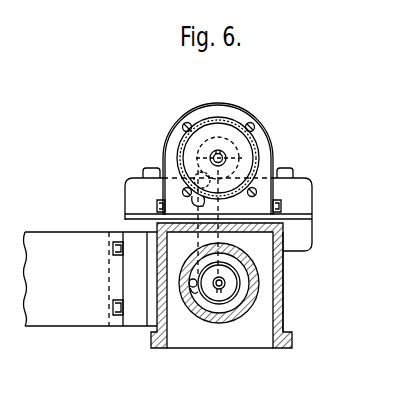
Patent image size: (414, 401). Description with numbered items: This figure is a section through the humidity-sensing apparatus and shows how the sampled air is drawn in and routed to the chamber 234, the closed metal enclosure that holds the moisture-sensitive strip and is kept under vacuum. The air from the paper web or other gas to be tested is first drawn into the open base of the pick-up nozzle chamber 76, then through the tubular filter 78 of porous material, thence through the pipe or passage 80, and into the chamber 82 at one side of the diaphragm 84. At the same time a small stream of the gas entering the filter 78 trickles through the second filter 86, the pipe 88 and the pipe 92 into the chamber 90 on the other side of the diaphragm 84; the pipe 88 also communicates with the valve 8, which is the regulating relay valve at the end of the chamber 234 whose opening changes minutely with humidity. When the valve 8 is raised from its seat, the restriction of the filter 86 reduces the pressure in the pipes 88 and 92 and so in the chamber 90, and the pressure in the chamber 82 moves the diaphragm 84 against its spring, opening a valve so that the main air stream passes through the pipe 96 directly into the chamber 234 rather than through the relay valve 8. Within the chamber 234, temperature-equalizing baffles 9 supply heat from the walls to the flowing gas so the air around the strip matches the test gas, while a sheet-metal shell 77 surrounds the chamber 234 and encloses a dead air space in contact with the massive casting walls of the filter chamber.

The chamber 234 is at (227, 113).
The valve 8 is at (224, 155).
The temperature-equalizing baffles 9 is at (188, 152).
The pipe 96 is at (176, 146).
The sheet-metal shell 77 is at (277, 149).
The chamber 82 is at (170, 197).
The pipe or passage 80 is at (192, 252).
The pipe 92 is at (282, 206).
The diaphragm 84 is at (293, 219).
The chamber 90 is at (290, 228).
The pipe 88 is at (220, 222).
The pick-up nozzle chamber 76 is at (282, 318).
The tubular filter 78 is at (232, 322).
The second filter 86 is at (222, 285).